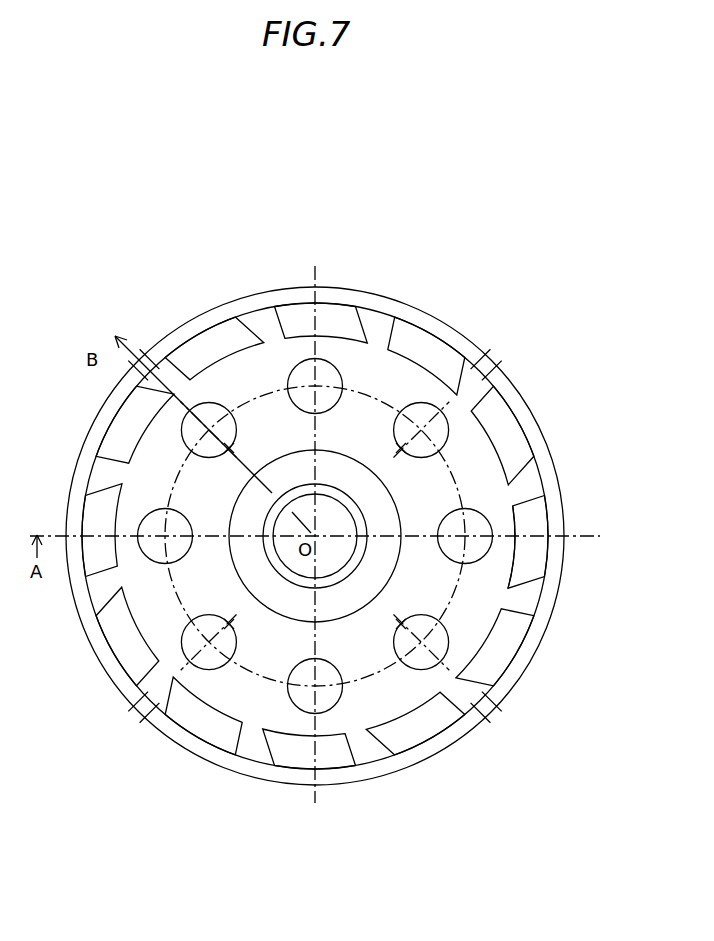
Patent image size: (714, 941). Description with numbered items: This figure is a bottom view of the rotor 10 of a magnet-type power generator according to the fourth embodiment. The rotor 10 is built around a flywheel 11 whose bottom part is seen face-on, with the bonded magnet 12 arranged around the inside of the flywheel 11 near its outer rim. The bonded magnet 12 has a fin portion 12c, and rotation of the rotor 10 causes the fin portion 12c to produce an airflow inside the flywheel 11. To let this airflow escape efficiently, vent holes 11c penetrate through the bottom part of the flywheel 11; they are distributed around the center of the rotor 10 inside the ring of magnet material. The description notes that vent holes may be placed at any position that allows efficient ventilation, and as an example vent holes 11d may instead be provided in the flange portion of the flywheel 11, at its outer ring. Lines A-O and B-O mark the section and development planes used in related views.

The rotor 10 is at (432, 318).
The flywheel 11 is at (552, 476).
The bonded magnet 12 is at (537, 524).
The fin portion 12c is at (527, 578).
The vent holes 11c is at (446, 433).
The vent holes 11d is at (487, 722).